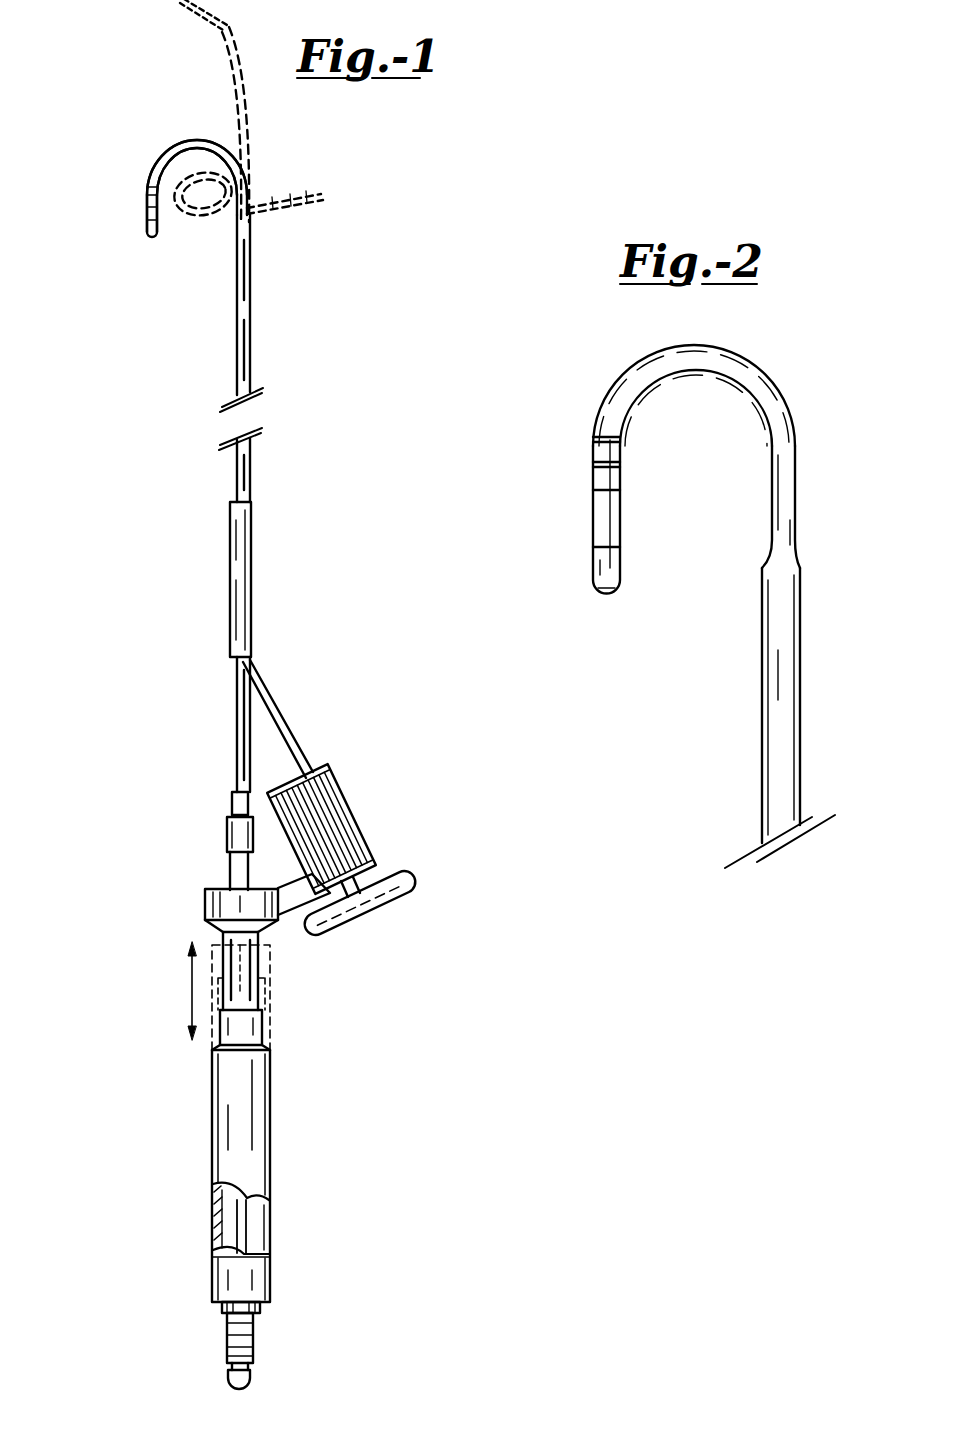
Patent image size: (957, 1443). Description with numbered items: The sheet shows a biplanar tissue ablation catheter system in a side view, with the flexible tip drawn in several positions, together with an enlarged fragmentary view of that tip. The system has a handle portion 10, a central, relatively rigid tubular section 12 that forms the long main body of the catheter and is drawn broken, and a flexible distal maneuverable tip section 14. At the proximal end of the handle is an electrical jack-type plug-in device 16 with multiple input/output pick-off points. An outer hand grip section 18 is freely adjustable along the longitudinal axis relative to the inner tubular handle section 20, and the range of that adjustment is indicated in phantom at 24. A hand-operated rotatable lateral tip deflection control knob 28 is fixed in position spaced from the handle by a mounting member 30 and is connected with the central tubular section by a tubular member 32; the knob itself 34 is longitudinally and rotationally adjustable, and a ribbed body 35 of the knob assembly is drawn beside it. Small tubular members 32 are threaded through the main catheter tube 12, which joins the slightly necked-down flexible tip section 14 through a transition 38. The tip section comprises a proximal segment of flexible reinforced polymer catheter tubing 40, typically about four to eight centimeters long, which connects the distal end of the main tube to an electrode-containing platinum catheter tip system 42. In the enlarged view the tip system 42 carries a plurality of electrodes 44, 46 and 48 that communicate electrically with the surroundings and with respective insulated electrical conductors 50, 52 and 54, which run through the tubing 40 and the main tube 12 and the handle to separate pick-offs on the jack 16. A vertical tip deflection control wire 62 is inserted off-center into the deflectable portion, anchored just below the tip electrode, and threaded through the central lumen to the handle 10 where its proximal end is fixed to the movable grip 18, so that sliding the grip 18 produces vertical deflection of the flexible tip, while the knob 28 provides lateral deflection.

In FIG. 1, the handle portion 10 is at (280, 1173).
In FIG. 1, the central tubular section 12 is at (260, 313).
In FIG. 2, the central tubular section 12 is at (802, 692).
In FIG. 1, the flexible distal maneuverable tip section 14 is at (158, 147).
In FIG. 1, the electrical jack-type plug-in device 16 is at (228, 1382).
In FIG. 1, the outer hand grip section 18 is at (217, 1113).
In FIG. 1, the inner tubular handle section 20 is at (205, 900).
In FIG. 1, the distance of adjustment 24 is at (272, 1003).
In FIG. 1, the lateral tip deflection control knob 28 is at (397, 786).
In FIG. 1, the mounting member 30 is at (293, 910).
In FIG. 1, the tubular member 32 is at (262, 693).
In FIG. 1, the knob 34 is at (353, 786).
In FIG. 1, the stopcock body 35 is at (315, 768).
In FIG. 2, the transition 38 is at (790, 530).
In FIG. 1, the flexible reinforced polymer catheter tubing 40 is at (230, 33).
In FIG. 2, the flexible reinforced polymer catheter tubing 40 is at (788, 470).
In FIG. 1, the platinum catheter tip system 42 is at (180, 4).
In FIG. 2, the platinum catheter tip system 42 is at (610, 592).
In FIG. 2, the electrode 44 is at (593, 437).
In FIG. 2, the electrode 46 is at (591, 462).
In FIG. 2, the electrode 48 is at (591, 490).
In FIG. 1, the insulated electrical conductor 50 is at (253, 1327).
In FIG. 1, the insulated electrical conductor 52 is at (253, 1337).
In FIG. 1, the insulated electrical conductor 54 is at (253, 1350).
In FIG. 1, the vertical tip deflection control wire 62 is at (245, 1233).